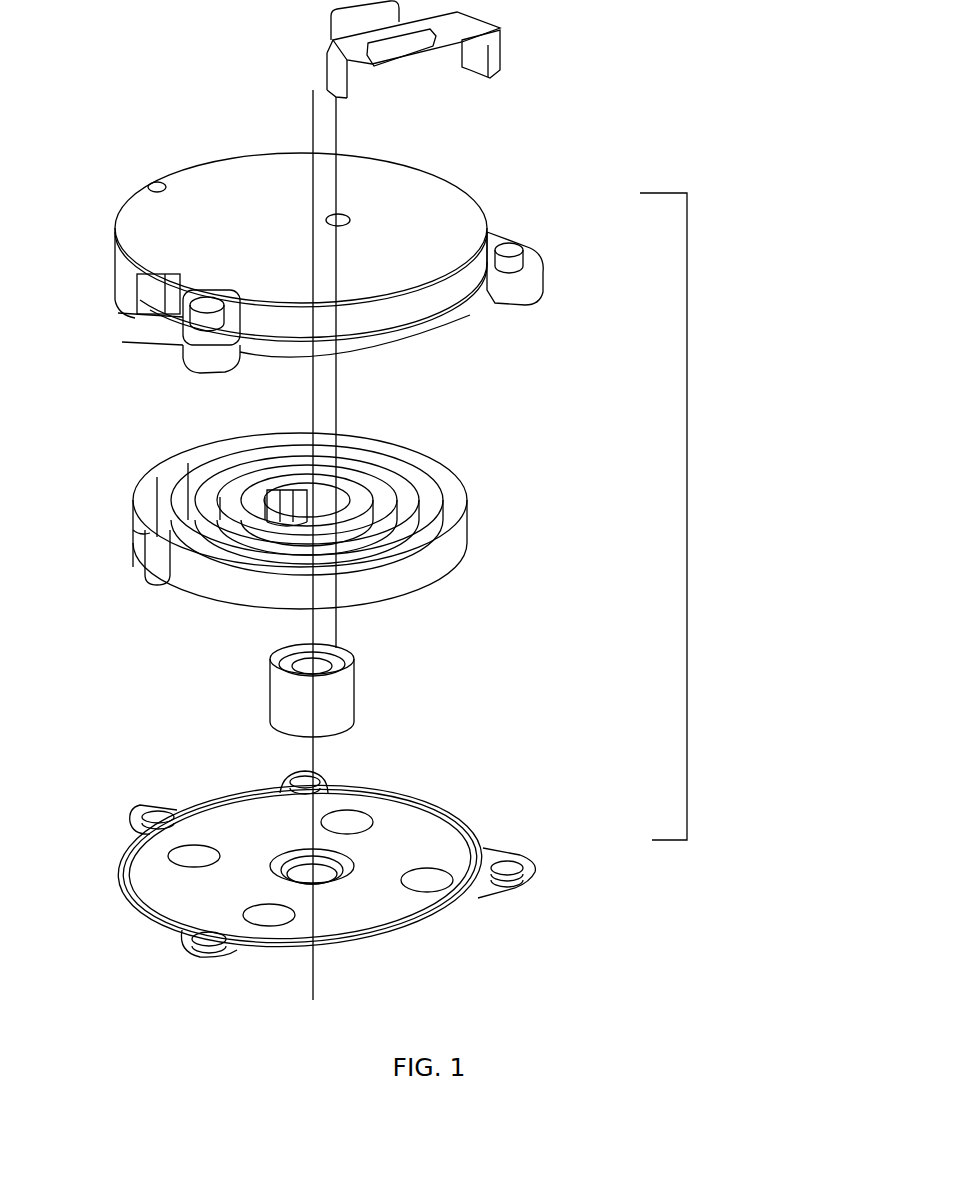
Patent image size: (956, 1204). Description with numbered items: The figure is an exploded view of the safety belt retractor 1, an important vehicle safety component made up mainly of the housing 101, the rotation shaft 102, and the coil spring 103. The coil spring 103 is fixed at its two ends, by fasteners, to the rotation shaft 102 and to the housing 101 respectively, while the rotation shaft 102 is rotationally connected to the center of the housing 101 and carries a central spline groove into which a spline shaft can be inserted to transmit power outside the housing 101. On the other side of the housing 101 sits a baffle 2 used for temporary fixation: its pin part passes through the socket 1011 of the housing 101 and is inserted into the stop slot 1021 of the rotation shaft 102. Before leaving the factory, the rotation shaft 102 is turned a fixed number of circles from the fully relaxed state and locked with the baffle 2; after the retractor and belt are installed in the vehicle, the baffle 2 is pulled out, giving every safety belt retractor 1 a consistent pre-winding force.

The safety belt retractor 1 is at (686, 517).
The baffle 2 is at (462, 38).
The housing 101 is at (430, 287).
The socket 1011 is at (345, 218).
The rotation shaft 102 is at (355, 708).
The stop slot 1021 is at (345, 660).
The coil spring 103 is at (467, 548).